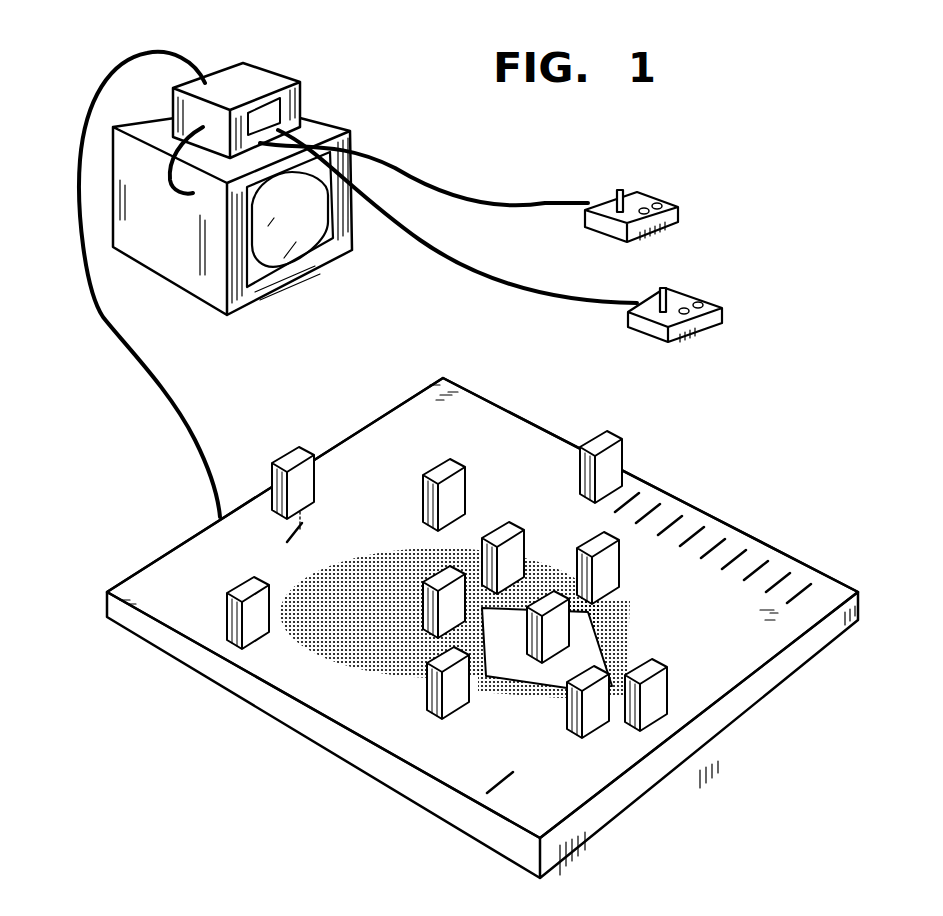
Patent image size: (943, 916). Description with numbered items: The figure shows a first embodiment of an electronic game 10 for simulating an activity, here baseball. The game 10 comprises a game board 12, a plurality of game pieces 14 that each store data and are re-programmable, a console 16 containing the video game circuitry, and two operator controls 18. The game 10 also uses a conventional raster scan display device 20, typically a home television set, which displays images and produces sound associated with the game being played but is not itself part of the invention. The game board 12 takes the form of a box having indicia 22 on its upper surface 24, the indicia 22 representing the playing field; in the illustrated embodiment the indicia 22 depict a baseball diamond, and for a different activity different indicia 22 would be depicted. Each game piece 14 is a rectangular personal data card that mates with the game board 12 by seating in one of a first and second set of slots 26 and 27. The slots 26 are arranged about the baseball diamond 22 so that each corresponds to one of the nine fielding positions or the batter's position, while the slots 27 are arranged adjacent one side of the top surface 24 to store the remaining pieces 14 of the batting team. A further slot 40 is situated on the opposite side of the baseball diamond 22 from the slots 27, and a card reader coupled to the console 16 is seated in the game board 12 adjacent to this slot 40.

The electronic game 10 is at (819, 200).
The game board 12 is at (717, 733).
The game pieces 14 is at (497, 520).
The console 16 is at (260, 80).
The operator controls 18 is at (697, 325).
The raster scan display device 20 is at (280, 282).
The indicia 22 is at (610, 622).
The upper surface 24 is at (378, 428).
The first set of slots 26 is at (307, 527).
The second set of slots 27 is at (785, 577).
The slot 40 is at (487, 793).